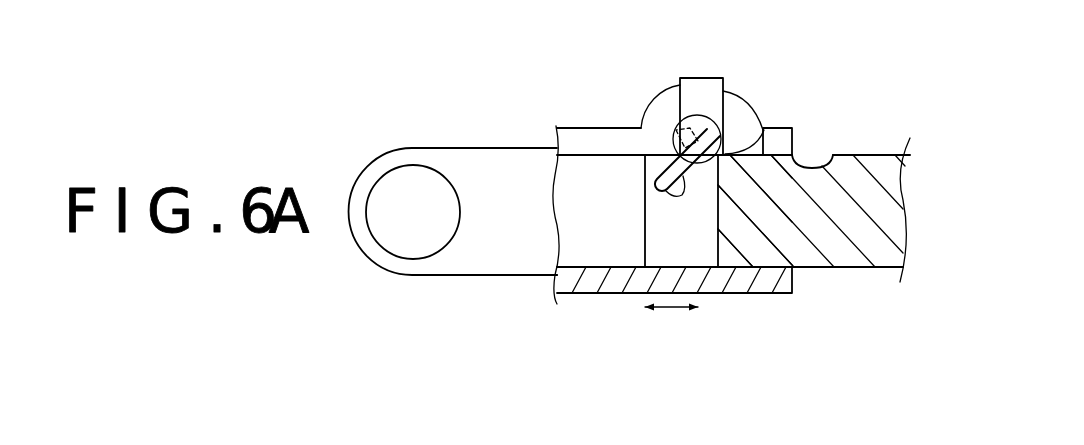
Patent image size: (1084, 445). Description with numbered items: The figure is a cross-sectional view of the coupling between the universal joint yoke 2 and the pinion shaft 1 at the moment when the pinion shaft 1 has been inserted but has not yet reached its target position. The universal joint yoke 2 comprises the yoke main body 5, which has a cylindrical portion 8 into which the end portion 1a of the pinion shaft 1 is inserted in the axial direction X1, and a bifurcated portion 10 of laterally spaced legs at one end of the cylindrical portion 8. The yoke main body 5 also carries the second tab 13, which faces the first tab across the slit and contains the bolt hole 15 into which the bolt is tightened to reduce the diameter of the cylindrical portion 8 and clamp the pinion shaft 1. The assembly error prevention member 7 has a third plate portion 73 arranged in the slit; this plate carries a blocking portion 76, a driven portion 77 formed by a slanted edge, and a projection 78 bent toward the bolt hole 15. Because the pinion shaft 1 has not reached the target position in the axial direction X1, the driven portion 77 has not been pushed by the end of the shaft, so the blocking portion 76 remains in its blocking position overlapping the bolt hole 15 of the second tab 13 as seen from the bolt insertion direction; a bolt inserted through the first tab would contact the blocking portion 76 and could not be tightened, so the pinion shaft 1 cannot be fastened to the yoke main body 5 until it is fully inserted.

The pinion shaft 1 is at (872, 152).
The end portion of the pinion shaft 1a is at (752, 250).
The universal joint yoke 2 is at (585, 77).
The yoke main body 5 is at (451, 146).
The assembly error prevention member 7 is at (703, 77).
The cylindrical portion 8 is at (617, 295).
The bifurcated portion 10 is at (480, 267).
The second tab 13 is at (741, 116).
The bolt hole 15 is at (763, 130).
The third plate portion 73 is at (693, 86).
The blocking portion 76 is at (660, 103).
The driven portion 77 is at (651, 195).
The projection 78 is at (673, 127).
The axial direction X1 is at (673, 309).